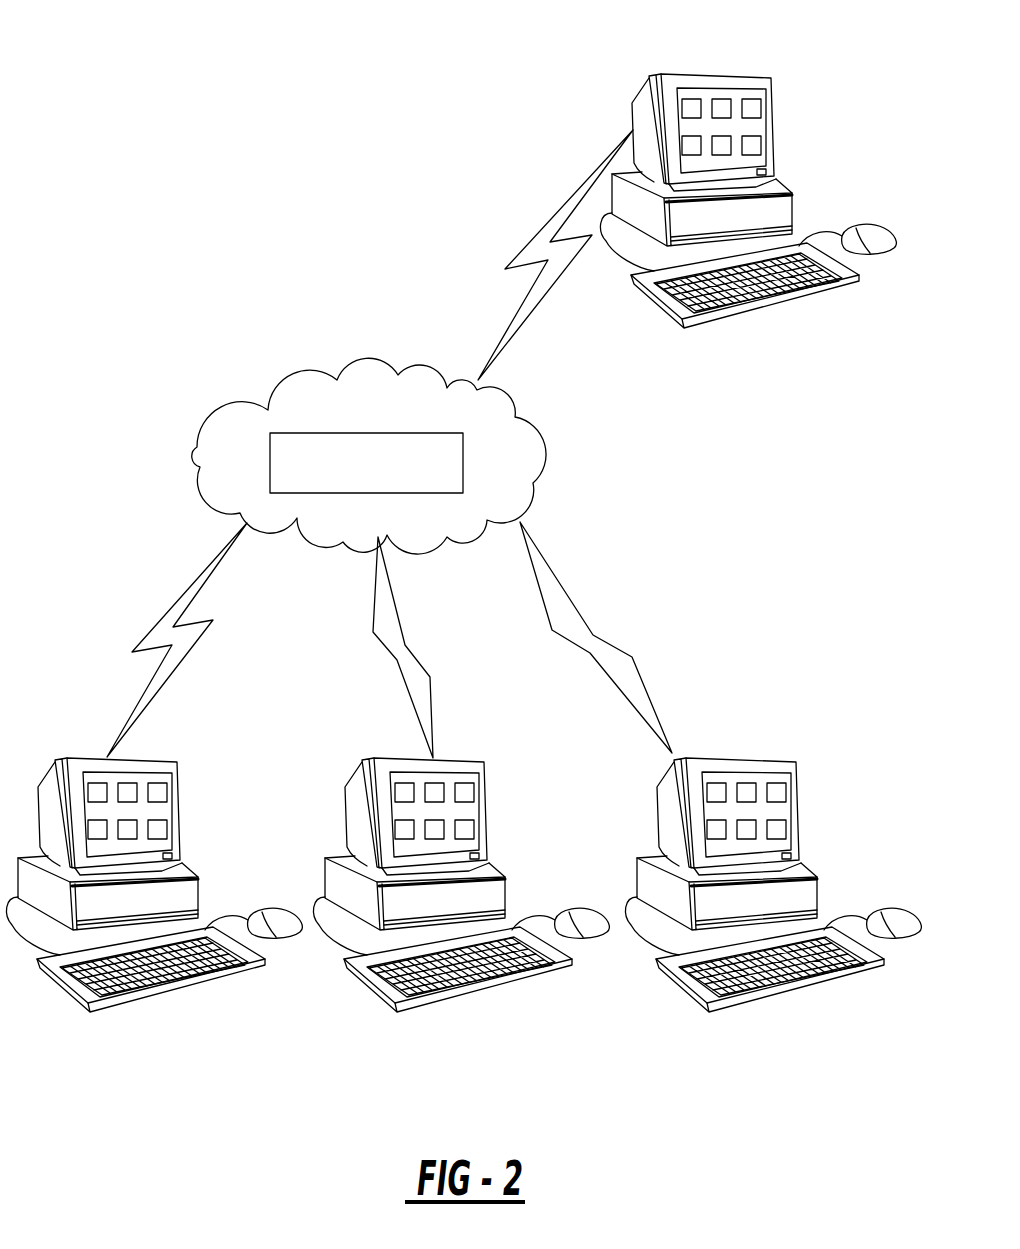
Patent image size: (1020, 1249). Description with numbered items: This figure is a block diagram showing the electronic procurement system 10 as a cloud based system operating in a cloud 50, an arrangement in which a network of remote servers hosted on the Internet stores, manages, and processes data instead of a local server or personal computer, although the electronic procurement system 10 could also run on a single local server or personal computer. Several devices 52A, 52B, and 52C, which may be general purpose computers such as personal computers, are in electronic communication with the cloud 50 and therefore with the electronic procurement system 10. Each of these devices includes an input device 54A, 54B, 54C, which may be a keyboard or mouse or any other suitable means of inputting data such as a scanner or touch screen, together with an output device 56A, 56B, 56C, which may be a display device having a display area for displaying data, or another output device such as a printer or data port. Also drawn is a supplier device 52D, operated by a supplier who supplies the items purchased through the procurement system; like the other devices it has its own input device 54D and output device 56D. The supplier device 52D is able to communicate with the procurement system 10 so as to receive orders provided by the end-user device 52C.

The electronic procurement system 10 is at (325, 433).
The cloud 50 is at (537, 427).
The device 52A is at (200, 885).
The device 52B is at (507, 887).
The device 52C is at (820, 897).
The supplier device 52D is at (793, 202).
The input device 54A is at (185, 985).
The input device 54B is at (457, 997).
The input device 54C is at (828, 978).
The input device 54D is at (813, 293).
The output device 56A is at (180, 798).
The output device 56B is at (487, 799).
The output device 56C is at (800, 777).
The output device 56D is at (770, 90).